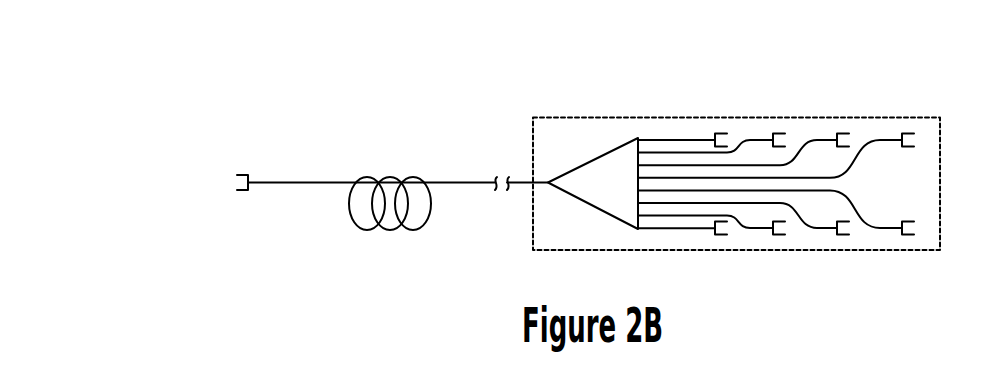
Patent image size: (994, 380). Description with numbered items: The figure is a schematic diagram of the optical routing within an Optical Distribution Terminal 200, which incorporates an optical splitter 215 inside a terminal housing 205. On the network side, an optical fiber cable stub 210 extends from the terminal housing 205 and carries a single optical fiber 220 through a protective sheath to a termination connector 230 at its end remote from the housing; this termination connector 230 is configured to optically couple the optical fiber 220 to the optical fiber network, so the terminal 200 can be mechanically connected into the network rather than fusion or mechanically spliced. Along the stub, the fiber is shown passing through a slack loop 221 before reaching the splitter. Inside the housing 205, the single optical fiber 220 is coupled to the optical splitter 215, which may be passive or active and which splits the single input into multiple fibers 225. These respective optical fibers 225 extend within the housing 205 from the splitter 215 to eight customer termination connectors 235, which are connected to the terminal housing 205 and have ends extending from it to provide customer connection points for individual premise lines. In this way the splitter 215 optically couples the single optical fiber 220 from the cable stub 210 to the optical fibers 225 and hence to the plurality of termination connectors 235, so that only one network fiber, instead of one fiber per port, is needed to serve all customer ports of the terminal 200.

The optical distribution terminal 200 is at (747, 96).
The terminal housing 205 is at (858, 252).
The optical fiber cable stub 210 is at (298, 182).
The optical splitter 215 is at (618, 147).
The optical fiber 220 is at (544, 182).
The fiber slack loop 221 is at (431, 207).
The optical fibers 225 is at (660, 163).
The termination connector 230 is at (243, 190).
The customer termination connectors 235 is at (837, 135).